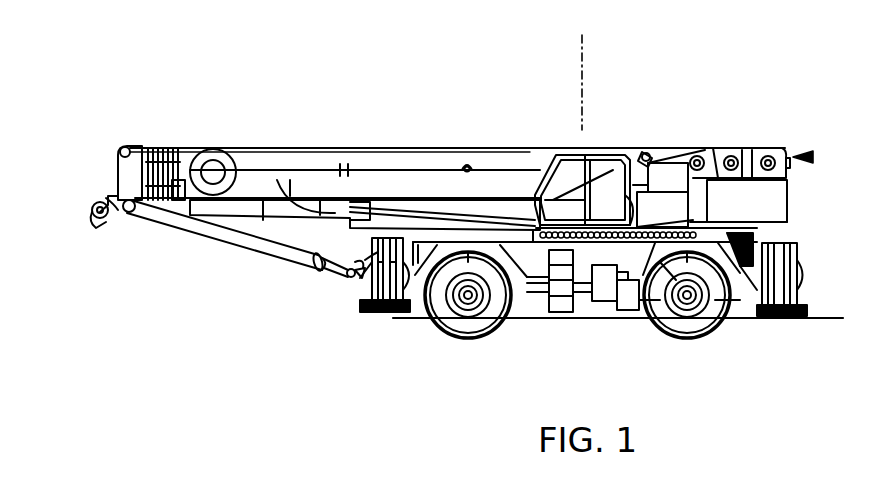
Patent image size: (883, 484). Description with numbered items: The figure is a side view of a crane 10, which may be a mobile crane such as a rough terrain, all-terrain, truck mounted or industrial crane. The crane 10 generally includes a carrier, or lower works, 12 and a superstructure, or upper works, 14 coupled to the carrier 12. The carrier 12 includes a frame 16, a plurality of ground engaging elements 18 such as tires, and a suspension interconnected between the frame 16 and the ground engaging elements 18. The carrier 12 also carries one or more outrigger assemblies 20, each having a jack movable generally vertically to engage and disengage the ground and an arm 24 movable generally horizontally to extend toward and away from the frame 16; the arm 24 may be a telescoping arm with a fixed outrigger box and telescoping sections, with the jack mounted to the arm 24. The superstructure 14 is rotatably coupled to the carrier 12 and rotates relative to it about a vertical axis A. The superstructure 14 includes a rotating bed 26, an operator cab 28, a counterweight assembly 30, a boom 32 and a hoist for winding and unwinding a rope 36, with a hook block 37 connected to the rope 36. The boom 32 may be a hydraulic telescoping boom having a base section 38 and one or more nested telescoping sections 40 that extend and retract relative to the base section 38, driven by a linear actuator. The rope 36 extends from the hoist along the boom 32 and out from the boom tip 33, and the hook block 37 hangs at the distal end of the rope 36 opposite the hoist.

The crane 10 is at (350, 100).
The vertical axis A is at (580, 77).
The carrier 12 is at (634, 315).
The superstructure 14 is at (812, 157).
The frame 16 is at (752, 253).
The ground engaging elements 18 is at (450, 306).
The outrigger assembly 20 is at (385, 302).
The arm 24 is at (380, 313).
The rotating bed 26 is at (700, 303).
The operator cab 28 is at (620, 167).
The counterweight assembly 30 is at (788, 208).
The boom 32 is at (232, 148).
The boom tip 33 is at (118, 212).
The rope 36 is at (203, 243).
The hook block 37 is at (347, 277).
The base section 38 is at (522, 160).
The telescoping sections 40 is at (153, 148).